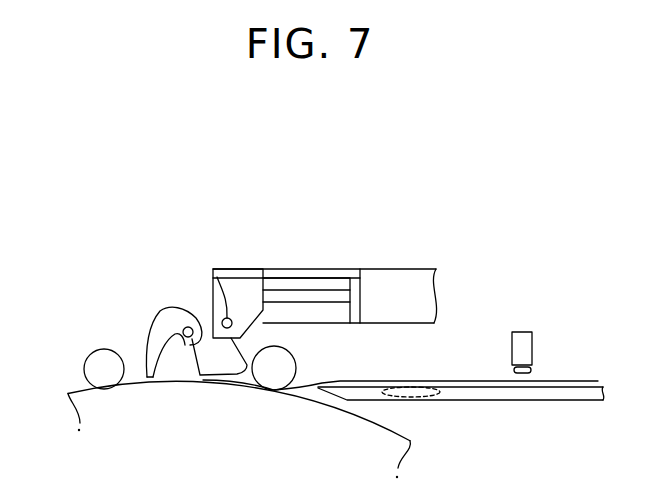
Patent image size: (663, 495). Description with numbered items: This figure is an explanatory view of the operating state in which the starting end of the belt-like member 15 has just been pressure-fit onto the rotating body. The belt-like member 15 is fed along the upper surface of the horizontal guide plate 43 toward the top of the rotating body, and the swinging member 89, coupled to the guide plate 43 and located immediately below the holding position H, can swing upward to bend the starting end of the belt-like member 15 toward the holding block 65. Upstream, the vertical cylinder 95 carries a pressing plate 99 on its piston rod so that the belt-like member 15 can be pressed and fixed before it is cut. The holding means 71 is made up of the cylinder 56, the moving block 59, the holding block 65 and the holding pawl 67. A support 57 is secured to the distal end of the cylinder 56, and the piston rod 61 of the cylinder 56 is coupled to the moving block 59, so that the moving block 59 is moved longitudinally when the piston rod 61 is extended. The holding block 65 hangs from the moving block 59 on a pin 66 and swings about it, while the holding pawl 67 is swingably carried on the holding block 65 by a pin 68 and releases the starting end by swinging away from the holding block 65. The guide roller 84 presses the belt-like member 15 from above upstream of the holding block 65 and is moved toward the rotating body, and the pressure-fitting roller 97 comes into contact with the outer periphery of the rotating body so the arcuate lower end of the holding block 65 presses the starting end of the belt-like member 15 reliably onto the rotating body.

The belt-like member 15 is at (340, 380).
The guide plate 43 is at (553, 400).
The cylinder 56 is at (402, 278).
The support 57 is at (297, 268).
The moving block 59 is at (244, 282).
The piston rod 61 is at (303, 290).
The holding block 65 is at (213, 306).
The pin 66 is at (213, 300).
The holding pawl 67 is at (158, 321).
The pin 68 is at (182, 338).
The holding means 71 is at (160, 300).
The guide roller 84 is at (291, 360).
The swinging member 89 is at (425, 379).
The cylinder 95 is at (521, 332).
The pressure-fitting roller 97 is at (93, 356).
The pressing plate 99 is at (534, 371).
The holding position H is at (411, 400).